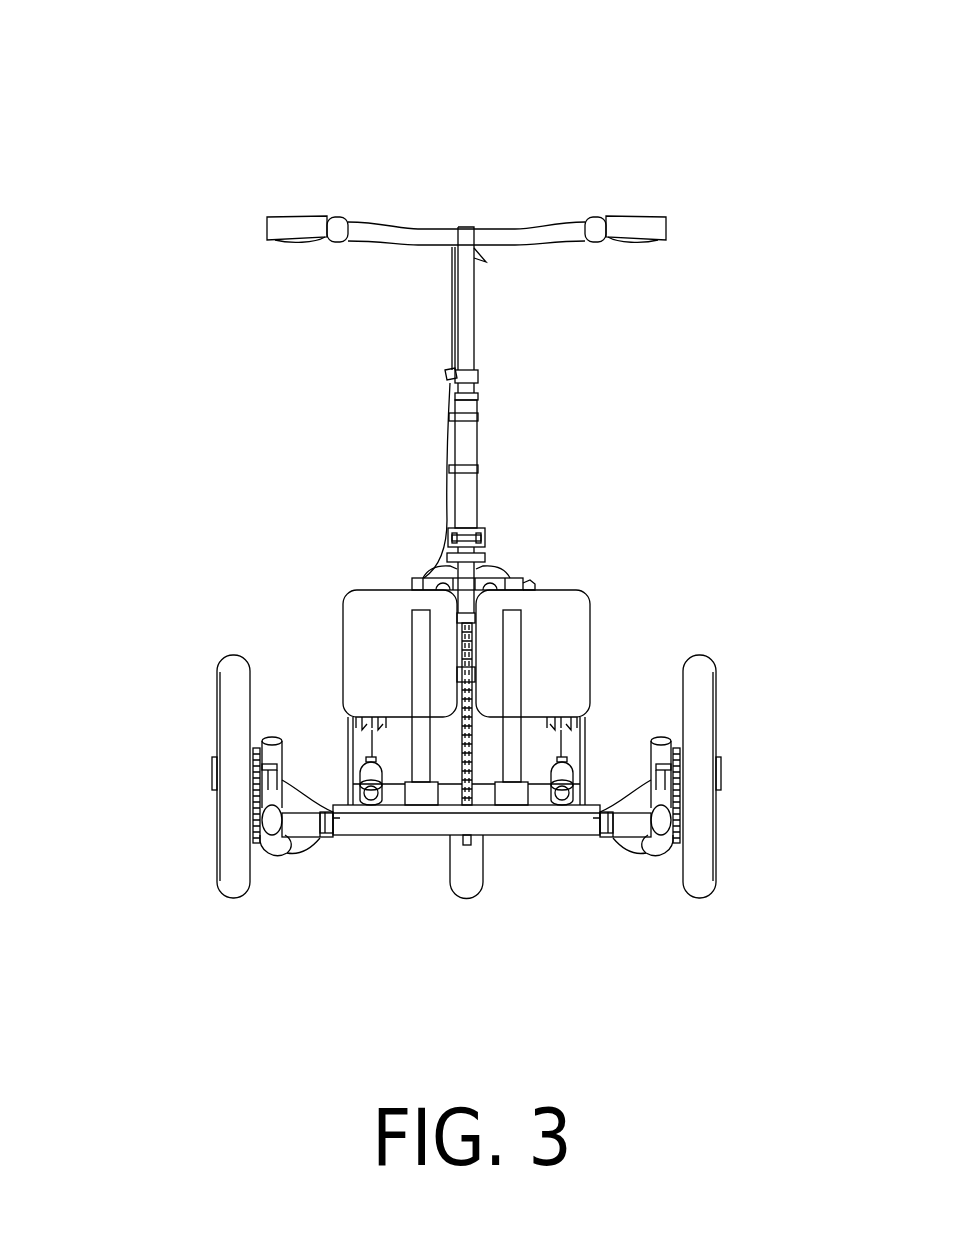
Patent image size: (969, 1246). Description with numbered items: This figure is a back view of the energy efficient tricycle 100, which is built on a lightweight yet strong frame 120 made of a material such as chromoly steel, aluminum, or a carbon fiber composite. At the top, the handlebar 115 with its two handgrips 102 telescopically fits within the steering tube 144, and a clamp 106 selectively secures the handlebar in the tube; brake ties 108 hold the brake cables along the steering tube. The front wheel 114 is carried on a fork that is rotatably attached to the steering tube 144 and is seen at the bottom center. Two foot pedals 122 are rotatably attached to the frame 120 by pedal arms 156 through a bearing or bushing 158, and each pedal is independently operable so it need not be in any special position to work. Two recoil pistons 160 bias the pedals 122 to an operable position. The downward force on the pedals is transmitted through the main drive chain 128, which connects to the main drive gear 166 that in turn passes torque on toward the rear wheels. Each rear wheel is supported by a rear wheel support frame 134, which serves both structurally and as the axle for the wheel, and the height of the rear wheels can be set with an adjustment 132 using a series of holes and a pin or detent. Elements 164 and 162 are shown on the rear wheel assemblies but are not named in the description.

The energy efficient tricycle 100 is at (190, 100).
The handgrips 102 is at (305, 228).
The handlebar 115 is at (493, 235).
The clamp 106 is at (462, 373).
The brake ties 108 is at (472, 417).
The steering tube 144 is at (463, 447).
The main drive chain 128 is at (465, 662).
The pedal arms 156 is at (422, 677).
The foot pedals 122 is at (355, 658).
The drive motors 164 is at (356, 720).
The sensors 162 is at (372, 746).
The adjustment 132 is at (256, 766).
The main drive gear 166 is at (258, 800).
The rear wheel support frame 134 is at (273, 847).
The recoil pistons 160 is at (372, 800).
The bearing or bushing 158 is at (408, 805).
The frame 120 is at (500, 825).
The front wheel 114 is at (470, 882).